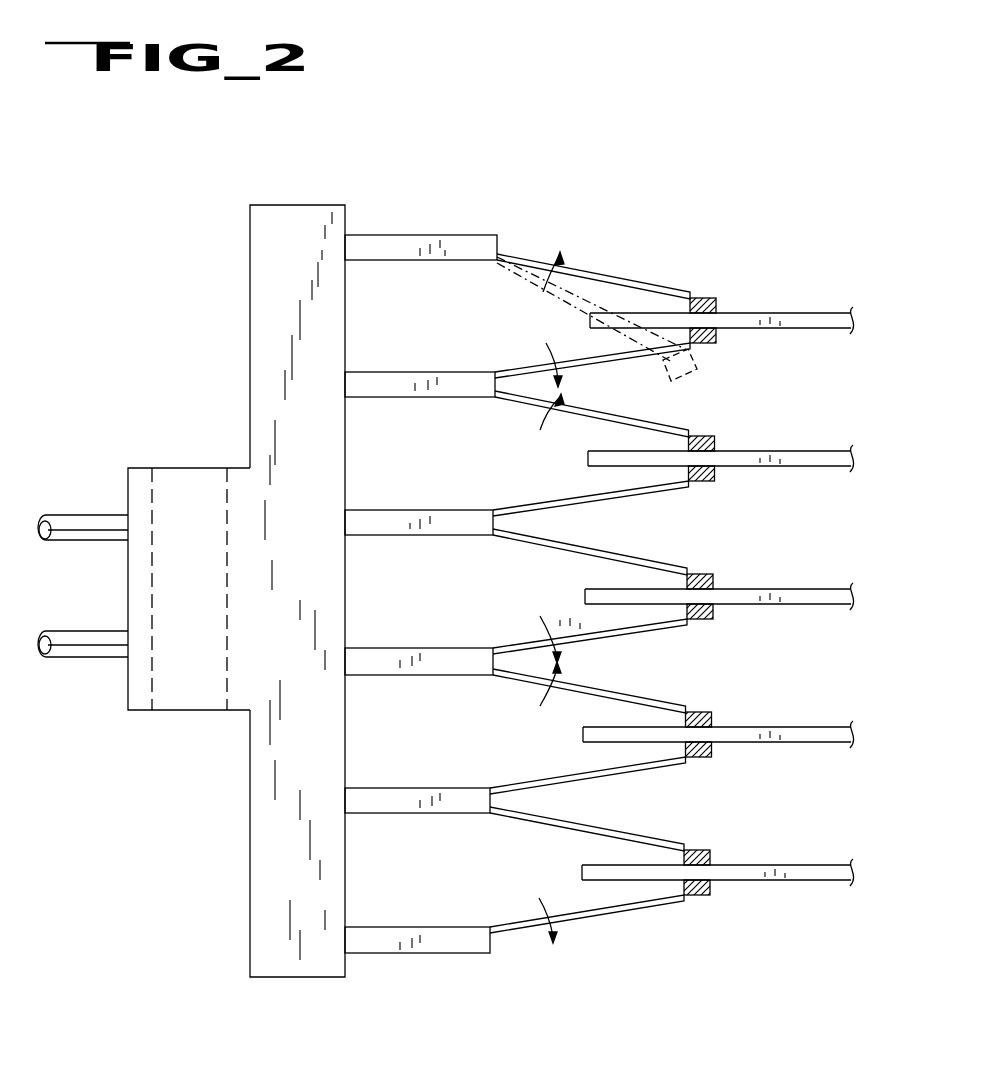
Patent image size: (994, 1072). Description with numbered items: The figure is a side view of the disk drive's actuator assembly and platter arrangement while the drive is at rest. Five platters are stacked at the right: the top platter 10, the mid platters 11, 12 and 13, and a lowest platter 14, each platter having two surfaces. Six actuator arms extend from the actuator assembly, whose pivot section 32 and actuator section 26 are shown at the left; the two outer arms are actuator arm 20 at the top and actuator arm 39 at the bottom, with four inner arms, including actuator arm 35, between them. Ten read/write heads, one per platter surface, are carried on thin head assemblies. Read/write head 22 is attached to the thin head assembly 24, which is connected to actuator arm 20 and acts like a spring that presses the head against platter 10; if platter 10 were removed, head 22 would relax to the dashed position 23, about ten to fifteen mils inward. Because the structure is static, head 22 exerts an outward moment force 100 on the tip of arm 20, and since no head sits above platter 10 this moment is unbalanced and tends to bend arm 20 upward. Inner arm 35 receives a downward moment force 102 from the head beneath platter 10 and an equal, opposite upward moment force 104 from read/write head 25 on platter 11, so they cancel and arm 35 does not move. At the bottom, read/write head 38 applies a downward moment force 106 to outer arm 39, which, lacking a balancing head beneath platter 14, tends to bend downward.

The top platter 10 is at (772, 313).
The mid platter 11 is at (780, 452).
The mid platter 12 is at (764, 589).
The mid platter 13 is at (763, 727).
The platter 14 is at (756, 865).
The actuator arm 20 is at (405, 238).
The read/write head 22 is at (713, 298).
The position 23 is at (700, 377).
The head assembly 24 is at (622, 280).
The read/write head 25 is at (715, 449).
The actuator section 26 is at (104, 514).
The pivot section 32 is at (211, 478).
The actuator arm 35 is at (409, 376).
The read/write head 38 is at (711, 890).
The actuator arm 39 is at (392, 928).
The moment force 100 is at (549, 292).
The moment force 102 is at (567, 358).
The moment force 104 is at (567, 420).
The moment force 106 is at (559, 912).